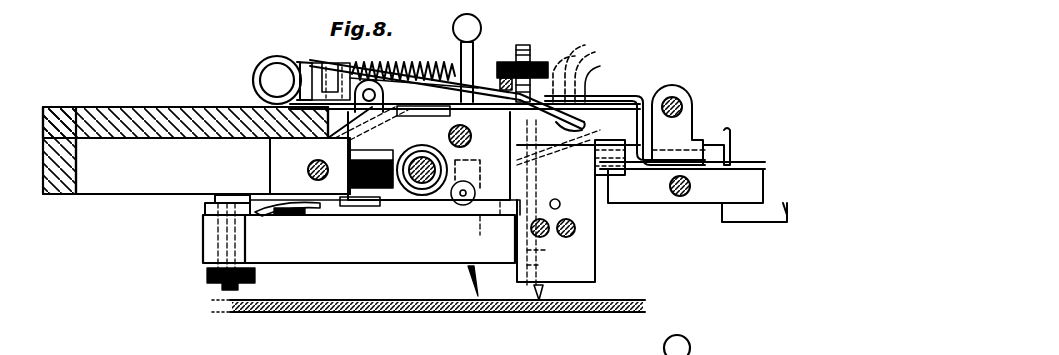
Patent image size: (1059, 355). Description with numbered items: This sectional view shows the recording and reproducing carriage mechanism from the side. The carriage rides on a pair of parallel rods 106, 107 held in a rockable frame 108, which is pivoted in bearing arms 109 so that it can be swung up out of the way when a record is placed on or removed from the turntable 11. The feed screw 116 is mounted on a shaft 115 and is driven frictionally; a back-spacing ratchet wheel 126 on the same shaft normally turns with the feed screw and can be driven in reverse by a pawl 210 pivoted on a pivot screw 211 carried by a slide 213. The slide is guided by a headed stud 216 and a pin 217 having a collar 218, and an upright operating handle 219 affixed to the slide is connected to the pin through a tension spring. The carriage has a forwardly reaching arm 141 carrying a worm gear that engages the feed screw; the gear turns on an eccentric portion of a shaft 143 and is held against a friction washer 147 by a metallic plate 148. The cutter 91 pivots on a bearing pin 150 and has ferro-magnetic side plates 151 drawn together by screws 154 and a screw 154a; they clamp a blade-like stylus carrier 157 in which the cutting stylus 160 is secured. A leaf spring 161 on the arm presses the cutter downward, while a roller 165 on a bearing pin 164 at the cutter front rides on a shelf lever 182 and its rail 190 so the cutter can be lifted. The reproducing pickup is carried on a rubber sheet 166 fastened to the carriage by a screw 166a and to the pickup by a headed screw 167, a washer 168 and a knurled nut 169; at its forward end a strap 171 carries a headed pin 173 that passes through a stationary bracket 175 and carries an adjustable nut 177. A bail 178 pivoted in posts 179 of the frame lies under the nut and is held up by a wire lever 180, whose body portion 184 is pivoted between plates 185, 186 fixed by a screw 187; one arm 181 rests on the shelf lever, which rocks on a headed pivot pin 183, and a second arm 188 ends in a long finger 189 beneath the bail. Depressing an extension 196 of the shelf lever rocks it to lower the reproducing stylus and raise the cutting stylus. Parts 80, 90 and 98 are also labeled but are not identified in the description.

The turntable 11 is at (390, 313).
The frame member 80 is at (466, 288).
The support 90 is at (364, 298).
The cutter 91 is at (608, 244).
The plate 98 is at (438, 268).
The parallel rod 106 is at (302, 172).
The parallel rod 107 is at (448, 137).
The rockable frame 108 is at (142, 90).
The bearing arms 109 is at (280, 169).
The shaft 115 is at (434, 230).
The feed screw 116 is at (432, 196).
The back-spacing ratchet wheel 126 is at (476, 290).
The forwardly reaching arm 141 is at (250, 112).
The shaft 143 is at (362, 212).
The friction washer 147 is at (380, 224).
The metallic plate 148 is at (398, 200).
The bearing pin 150 is at (491, 182).
The ferro-magnetic side plates 151 is at (598, 279).
The screws 154 is at (566, 237).
The screw 154a is at (560, 206).
The stylus carrier 157 is at (479, 222).
The cutting stylus 160 is at (547, 298).
The leaf spring 161 is at (588, 100).
The bearing pin 164 is at (602, 140).
The roller 165 is at (586, 127).
The sheet of rubber 166 is at (268, 222).
The screw 166a is at (300, 220).
The headed screw 167 is at (228, 195).
The washer 168 is at (268, 186).
The knurled nut 169 is at (206, 277).
The strap 171 is at (491, 283).
The headed pin 173 is at (530, 254).
The stationary bracket 175 is at (532, 172).
The nut 177 is at (553, 64).
The bail 178 is at (500, 62).
The posts 179 is at (436, 42).
The wire lever 180 is at (745, 145).
The arm 181 is at (736, 165).
The shelf lever 182 is at (746, 196).
The headed pivot pin 183 is at (682, 198).
The body portion 184 is at (708, 172).
The plate 185 is at (690, 100).
The plate 186 is at (722, 128).
The screw 187 is at (672, 96).
The second arm 188 is at (650, 137).
The long finger 189 is at (583, 90).
The rail 190 is at (612, 192).
The extension 196 is at (771, 224).
The pawl 210 is at (312, 64).
The pivot screw 211 is at (263, 70).
The slide 213 is at (580, 50).
The headed stud 216 is at (590, 52).
The pin 217 is at (383, 52).
The collar 218 is at (252, 82).
The upright operating handle 219 is at (455, 70).